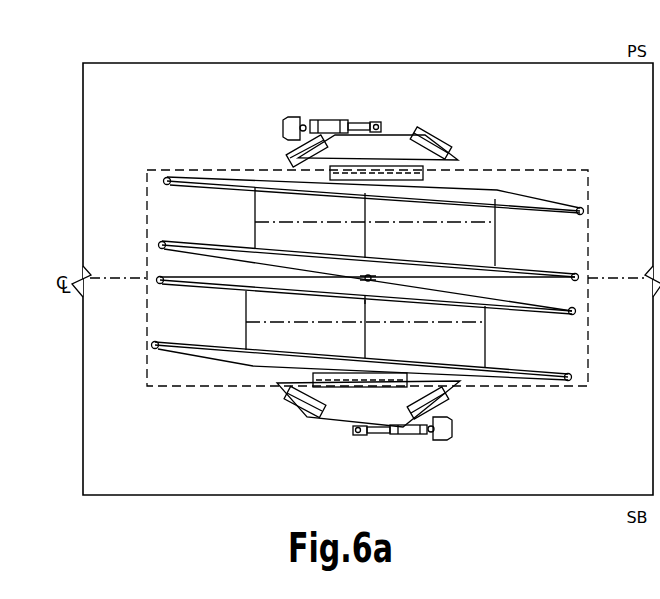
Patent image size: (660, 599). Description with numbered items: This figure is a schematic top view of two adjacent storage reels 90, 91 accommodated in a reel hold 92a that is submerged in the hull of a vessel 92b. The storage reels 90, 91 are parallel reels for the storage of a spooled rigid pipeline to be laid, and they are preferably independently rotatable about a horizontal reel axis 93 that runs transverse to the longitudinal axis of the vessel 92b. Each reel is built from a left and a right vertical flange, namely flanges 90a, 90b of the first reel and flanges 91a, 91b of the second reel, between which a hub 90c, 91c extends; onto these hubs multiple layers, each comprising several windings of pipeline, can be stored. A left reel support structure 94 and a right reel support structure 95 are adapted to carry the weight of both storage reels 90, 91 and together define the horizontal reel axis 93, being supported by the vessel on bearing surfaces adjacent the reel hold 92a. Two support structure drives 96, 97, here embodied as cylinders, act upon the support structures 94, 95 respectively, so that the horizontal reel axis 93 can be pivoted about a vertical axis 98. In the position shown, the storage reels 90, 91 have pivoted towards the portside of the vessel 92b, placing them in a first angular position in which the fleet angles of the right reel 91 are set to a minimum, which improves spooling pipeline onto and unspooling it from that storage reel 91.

The storage reel 90 is at (405, 212).
The left vertical flange 90a is at (538, 208).
The right vertical flange 90b is at (553, 272).
The hub 90c is at (253, 212).
The storage reel 91 is at (403, 329).
The left vertical flange 91a is at (553, 310).
The right vertical flange 91b is at (550, 373).
The hub 91c is at (245, 310).
The reel hold 92a is at (582, 375).
The vessel 92b is at (366, 279).
The horizontal reel axis 93 is at (367, 315).
The left reel support structure 94 is at (387, 152).
The right reel support structure 95 is at (342, 413).
The support structure drive 96 is at (330, 130).
The support structure drive 97 is at (413, 428).
The vertical axis 98 is at (372, 278).